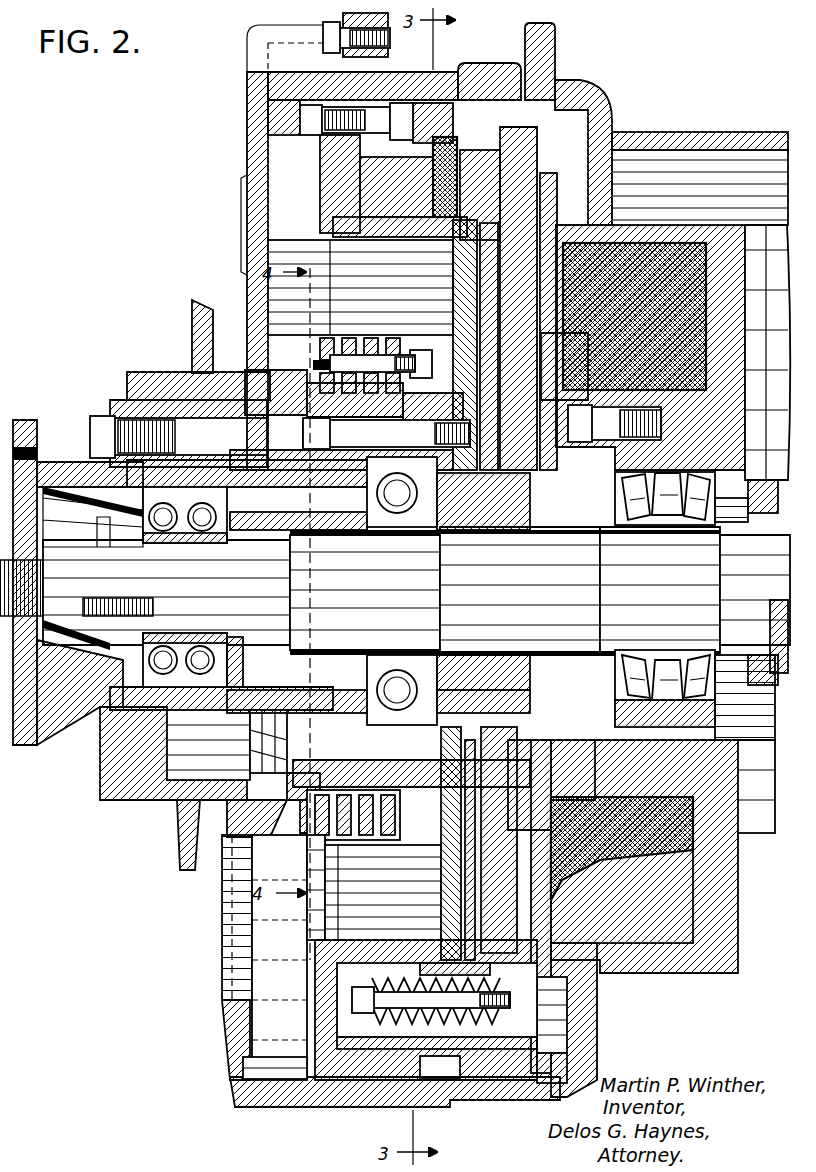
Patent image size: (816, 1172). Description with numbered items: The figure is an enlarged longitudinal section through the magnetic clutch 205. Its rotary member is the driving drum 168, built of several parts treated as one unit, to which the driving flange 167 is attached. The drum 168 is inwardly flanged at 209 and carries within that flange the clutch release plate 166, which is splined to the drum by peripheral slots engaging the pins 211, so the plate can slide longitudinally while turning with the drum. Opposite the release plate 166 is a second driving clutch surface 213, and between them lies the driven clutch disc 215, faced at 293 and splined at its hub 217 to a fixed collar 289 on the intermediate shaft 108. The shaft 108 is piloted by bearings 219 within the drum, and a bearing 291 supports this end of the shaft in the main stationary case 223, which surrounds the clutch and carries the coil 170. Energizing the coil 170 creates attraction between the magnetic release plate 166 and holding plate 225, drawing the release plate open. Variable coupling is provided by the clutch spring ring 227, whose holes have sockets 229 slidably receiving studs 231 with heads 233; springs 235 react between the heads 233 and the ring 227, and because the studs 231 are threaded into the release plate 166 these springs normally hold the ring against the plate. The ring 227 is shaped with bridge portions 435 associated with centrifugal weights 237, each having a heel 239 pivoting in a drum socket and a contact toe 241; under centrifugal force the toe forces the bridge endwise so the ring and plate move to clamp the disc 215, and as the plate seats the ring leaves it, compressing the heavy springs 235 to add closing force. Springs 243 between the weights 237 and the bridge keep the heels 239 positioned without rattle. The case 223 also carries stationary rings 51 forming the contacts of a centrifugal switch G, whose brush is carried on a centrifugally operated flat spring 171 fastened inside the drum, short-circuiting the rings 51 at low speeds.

The intermediate shaft 108 is at (125, 588).
The driving flange 167 is at (25, 418).
The magnetic clutch 205 is at (236, 130).
The driving drum 168 is at (440, 105).
The heel 239 is at (470, 130).
The contact toe 241 is at (548, 82).
The pin 211 is at (525, 130).
The main stationary case 223 is at (603, 120).
The inward flange 209 is at (552, 170).
The clutch release plate 166 is at (630, 138).
The centrifugal weight 237 is at (380, 180).
The spring 243 is at (415, 205).
The facing 293 is at (500, 245).
The holding plate 225 is at (560, 270).
The coil 170 is at (718, 284).
The bridge portion 435 is at (360, 287).
The second driving clutch surface 213 is at (465, 280).
The driven clutch disc 215 is at (482, 300).
The centrifugal switch G is at (322, 340).
The stationary ring 51 is at (345, 343).
The flat spring 171 is at (398, 348).
The bearing 219 is at (207, 533).
The hub spline 217 is at (510, 600).
The fixed collar 289 is at (575, 600).
The bearing 291 is at (688, 535).
The head 233 is at (340, 985).
The stud 231 is at (380, 1050).
The spring 235 is at (408, 1010).
The socket 229 is at (440, 1078).
The clutch spring ring 227 is at (478, 1030).